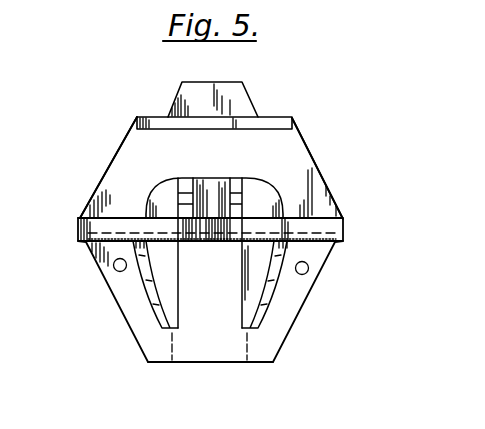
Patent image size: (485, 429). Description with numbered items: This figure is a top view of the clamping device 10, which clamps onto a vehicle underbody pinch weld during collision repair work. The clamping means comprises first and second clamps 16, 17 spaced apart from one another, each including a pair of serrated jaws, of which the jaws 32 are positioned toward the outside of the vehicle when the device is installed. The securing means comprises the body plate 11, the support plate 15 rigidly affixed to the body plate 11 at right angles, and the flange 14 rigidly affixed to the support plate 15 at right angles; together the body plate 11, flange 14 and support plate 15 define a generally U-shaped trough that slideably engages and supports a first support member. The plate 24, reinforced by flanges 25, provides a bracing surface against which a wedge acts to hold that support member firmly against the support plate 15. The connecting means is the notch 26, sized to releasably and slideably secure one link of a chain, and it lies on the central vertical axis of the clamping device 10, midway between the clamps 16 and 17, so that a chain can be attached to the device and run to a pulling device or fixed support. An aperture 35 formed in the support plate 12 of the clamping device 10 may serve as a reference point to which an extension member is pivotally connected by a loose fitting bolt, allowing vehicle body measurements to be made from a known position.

The clamping device 10 is at (330, 181).
The body plate 11 is at (78, 224).
The support plate 12 is at (215, 352).
The flange 14 is at (267, 125).
The support plate 15 is at (270, 149).
The first clamp 16 is at (319, 217).
The second clamp 17 is at (107, 207).
The plate 24 is at (212, 192).
The flanges 25 is at (172, 190).
The notch 26 is at (213, 233).
The jaws 32 is at (87, 247).
The aperture 35 is at (114, 270).